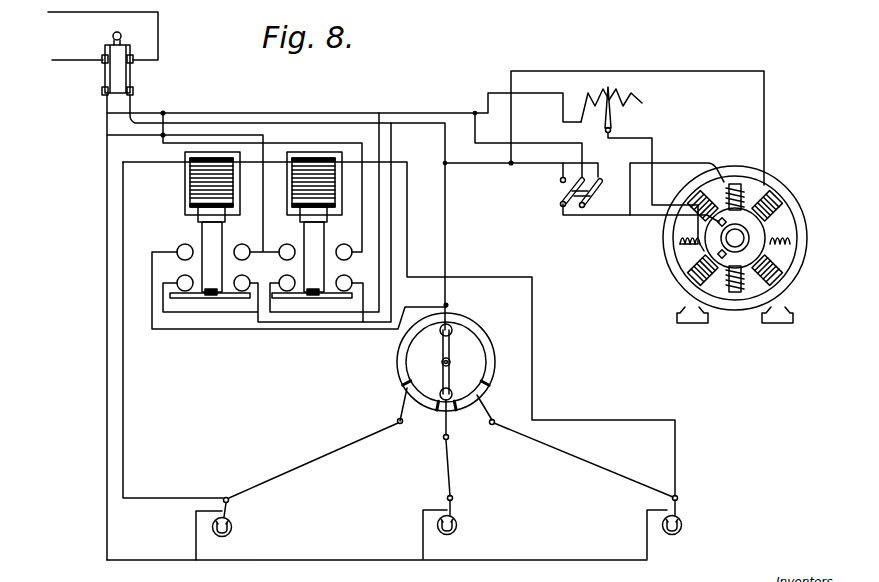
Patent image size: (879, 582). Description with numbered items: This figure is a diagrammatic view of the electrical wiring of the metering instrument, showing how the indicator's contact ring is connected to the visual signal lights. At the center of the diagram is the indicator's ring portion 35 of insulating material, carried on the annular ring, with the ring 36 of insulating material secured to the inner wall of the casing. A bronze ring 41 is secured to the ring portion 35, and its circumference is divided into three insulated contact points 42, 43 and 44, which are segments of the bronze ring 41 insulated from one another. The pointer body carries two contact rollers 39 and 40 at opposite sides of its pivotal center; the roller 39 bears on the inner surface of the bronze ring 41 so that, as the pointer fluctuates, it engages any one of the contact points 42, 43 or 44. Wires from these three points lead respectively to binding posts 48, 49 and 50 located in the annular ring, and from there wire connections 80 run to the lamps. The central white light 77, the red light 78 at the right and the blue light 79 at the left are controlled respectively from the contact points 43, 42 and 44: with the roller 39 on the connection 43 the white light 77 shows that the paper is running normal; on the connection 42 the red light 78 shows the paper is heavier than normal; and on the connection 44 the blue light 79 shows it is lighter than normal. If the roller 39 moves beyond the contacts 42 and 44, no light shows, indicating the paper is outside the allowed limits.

The ring portion 35 is at (396, 369).
The ring of insulating material 36 is at (492, 347).
The contact roller 39 is at (457, 412).
The contact roller 40 is at (452, 326).
The bronze ring 41 is at (397, 357).
The contact point 42 is at (405, 388).
The contact point 43 is at (435, 412).
The contact point 44 is at (478, 393).
The binding post 48 is at (398, 424).
The binding post 49 is at (444, 439).
The binding post 50 is at (493, 425).
The white light 77 is at (454, 520).
The red light 78 is at (681, 520).
The blue light 79 is at (228, 516).
The wire connections 80 is at (333, 558).